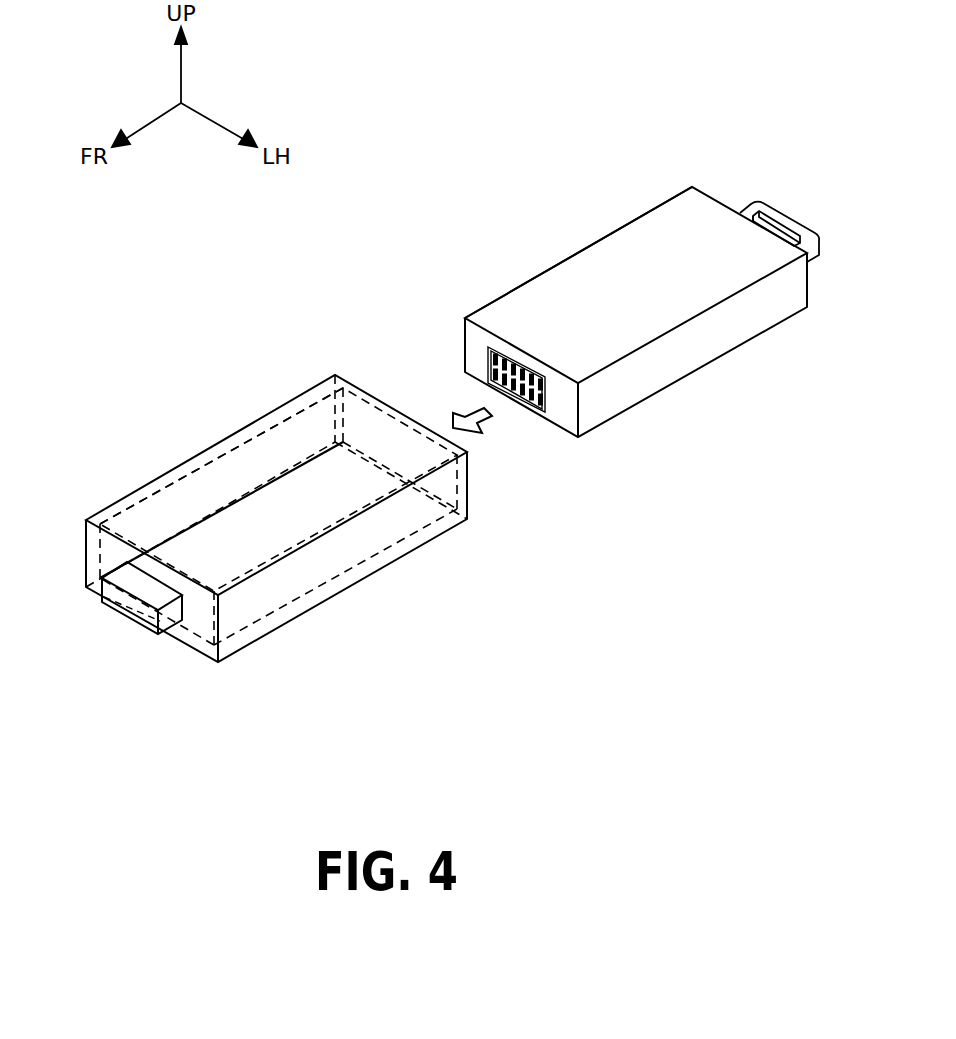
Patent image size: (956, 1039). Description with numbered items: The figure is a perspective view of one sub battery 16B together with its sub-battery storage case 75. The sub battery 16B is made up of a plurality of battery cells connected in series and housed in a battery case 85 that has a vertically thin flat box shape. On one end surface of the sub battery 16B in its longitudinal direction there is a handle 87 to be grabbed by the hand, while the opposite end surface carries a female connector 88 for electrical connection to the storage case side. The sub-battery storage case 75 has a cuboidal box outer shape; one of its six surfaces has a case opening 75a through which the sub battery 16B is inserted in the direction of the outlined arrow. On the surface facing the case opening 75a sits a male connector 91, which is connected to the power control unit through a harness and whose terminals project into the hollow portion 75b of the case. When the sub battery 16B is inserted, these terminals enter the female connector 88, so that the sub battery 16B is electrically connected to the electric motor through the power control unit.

The sub battery 16B is at (636, 208).
The sub-battery storage case 75 is at (222, 428).
The case opening 75a is at (347, 422).
The hollow portion 75b is at (203, 476).
The battery case 85 is at (563, 277).
The handle 87 is at (773, 215).
The female connector 88 is at (545, 396).
The male connector 91 is at (130, 607).